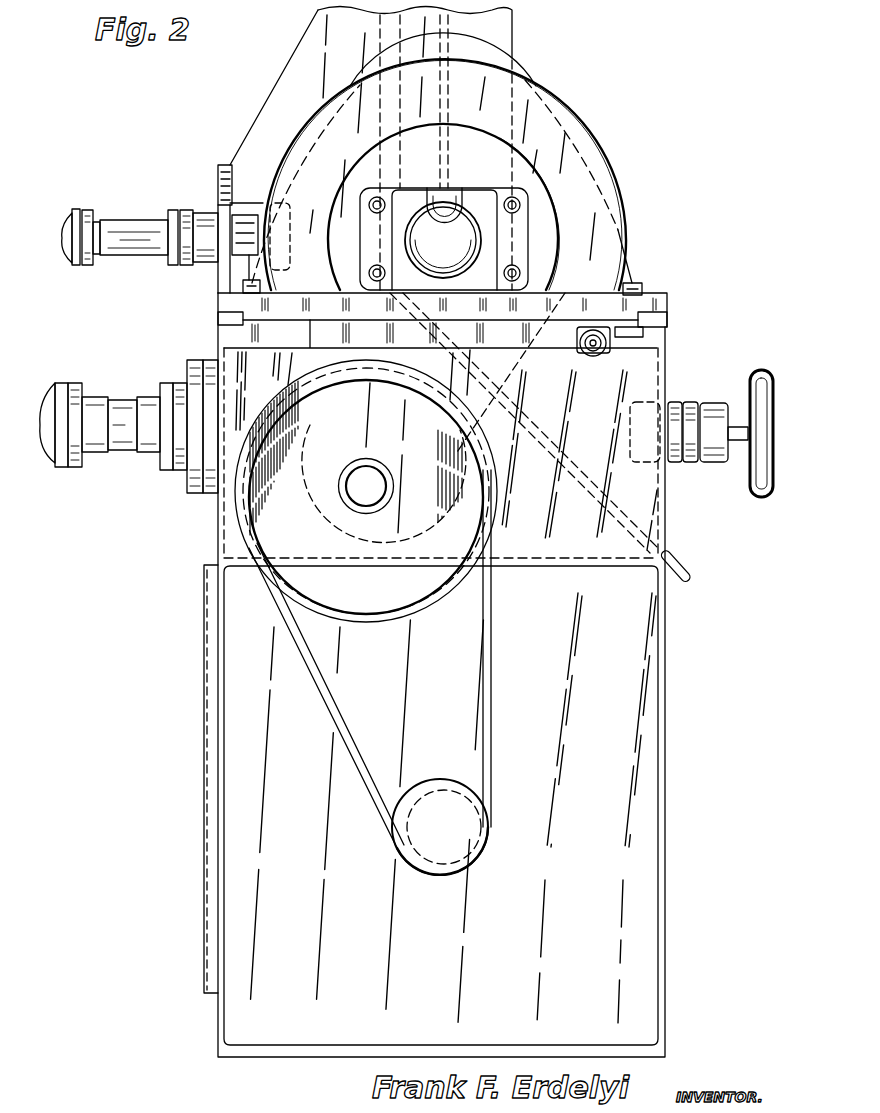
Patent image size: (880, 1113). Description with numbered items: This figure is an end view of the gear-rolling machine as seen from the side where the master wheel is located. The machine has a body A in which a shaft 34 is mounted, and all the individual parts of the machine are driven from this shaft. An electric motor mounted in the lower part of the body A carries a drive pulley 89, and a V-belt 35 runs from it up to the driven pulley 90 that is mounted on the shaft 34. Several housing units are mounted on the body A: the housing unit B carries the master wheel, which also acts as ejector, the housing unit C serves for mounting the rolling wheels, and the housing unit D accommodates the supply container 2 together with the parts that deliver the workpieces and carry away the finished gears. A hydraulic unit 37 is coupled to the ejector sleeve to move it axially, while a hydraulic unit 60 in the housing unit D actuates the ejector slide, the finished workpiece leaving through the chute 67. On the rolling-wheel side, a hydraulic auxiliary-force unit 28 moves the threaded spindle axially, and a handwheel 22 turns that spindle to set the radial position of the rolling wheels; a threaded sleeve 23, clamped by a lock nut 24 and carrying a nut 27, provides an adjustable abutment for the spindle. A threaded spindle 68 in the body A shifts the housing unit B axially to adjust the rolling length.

The supply container 2 is at (502, 40).
The housing unit D is at (307, 46).
The housing unit C is at (318, 118).
The housing unit B is at (410, 233).
The hydraulic unit 37 is at (477, 247).
The hydraulic unit 60 is at (135, 222).
The hydraulic auxiliary-force unit 28 is at (123, 403).
The threaded spindle 68 is at (585, 353).
The lock nut 24 is at (678, 405).
The threaded sleeve 23 is at (688, 468).
The nut 27 is at (715, 405).
The handwheel 22 is at (758, 497).
The body A is at (237, 535).
The driven pulley 90 is at (457, 540).
The shaft 34 is at (380, 487).
The V-belt 35 is at (483, 712).
The drive pulley 89 is at (467, 863).
The chute 67 is at (686, 568).